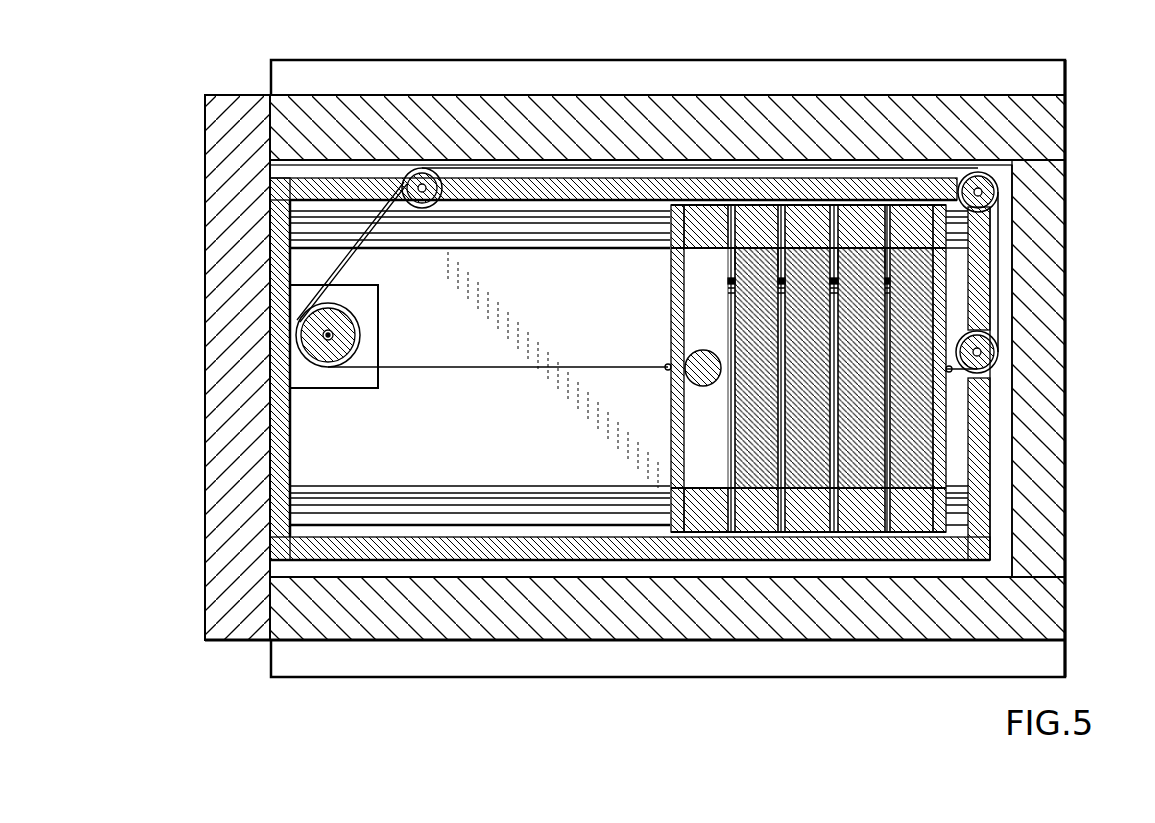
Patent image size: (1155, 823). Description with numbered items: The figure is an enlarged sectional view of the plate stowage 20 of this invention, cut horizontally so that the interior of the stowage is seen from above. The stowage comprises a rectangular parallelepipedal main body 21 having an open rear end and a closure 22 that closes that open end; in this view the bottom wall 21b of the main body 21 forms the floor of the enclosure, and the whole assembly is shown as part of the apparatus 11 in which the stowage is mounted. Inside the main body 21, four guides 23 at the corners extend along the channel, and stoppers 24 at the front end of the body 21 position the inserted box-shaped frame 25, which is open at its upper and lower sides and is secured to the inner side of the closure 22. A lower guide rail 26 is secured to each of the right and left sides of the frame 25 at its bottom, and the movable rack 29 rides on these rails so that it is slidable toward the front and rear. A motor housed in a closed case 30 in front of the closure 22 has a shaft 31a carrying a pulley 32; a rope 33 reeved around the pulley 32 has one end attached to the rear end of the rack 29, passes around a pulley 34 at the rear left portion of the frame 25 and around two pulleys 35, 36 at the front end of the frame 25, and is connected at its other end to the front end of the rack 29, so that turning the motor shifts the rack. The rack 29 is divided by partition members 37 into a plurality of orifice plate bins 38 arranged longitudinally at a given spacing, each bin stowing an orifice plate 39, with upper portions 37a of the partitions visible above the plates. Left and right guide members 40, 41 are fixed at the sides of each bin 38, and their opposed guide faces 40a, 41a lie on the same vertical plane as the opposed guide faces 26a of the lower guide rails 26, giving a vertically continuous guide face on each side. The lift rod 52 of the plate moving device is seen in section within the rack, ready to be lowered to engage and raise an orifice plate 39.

The apparatus 11 is at (1068, 143).
The plate stowage 20 is at (1066, 257).
The main body 21 is at (512, 628).
The bottom wall 21b is at (310, 467).
The closure 22 is at (210, 420).
The guides 23 is at (345, 170).
The stoppers 24 is at (1003, 530).
The frame 25 is at (993, 418).
The lower guide rail 26 is at (532, 220).
The guide face 26a is at (487, 248).
The movable rack 29 is at (958, 438).
The closed case 30 is at (378, 300).
The shaft 31a is at (328, 340).
The pulley 32 is at (355, 335).
The rope 33 is at (470, 367).
The pulley 34 is at (415, 180).
The pulley 35 is at (997, 185).
The pulley 36 is at (1000, 345).
The partition members 37 is at (672, 462).
The plate upper portion 37a is at (690, 262).
The orifice plate bins 38 is at (719, 319).
The orifice plates 39 is at (790, 265).
The left guide member 40 is at (712, 215).
The guide face 40a is at (703, 213).
The right guide member 41 is at (708, 525).
The guide face 41a is at (692, 523).
The lift rod 52 is at (690, 352).